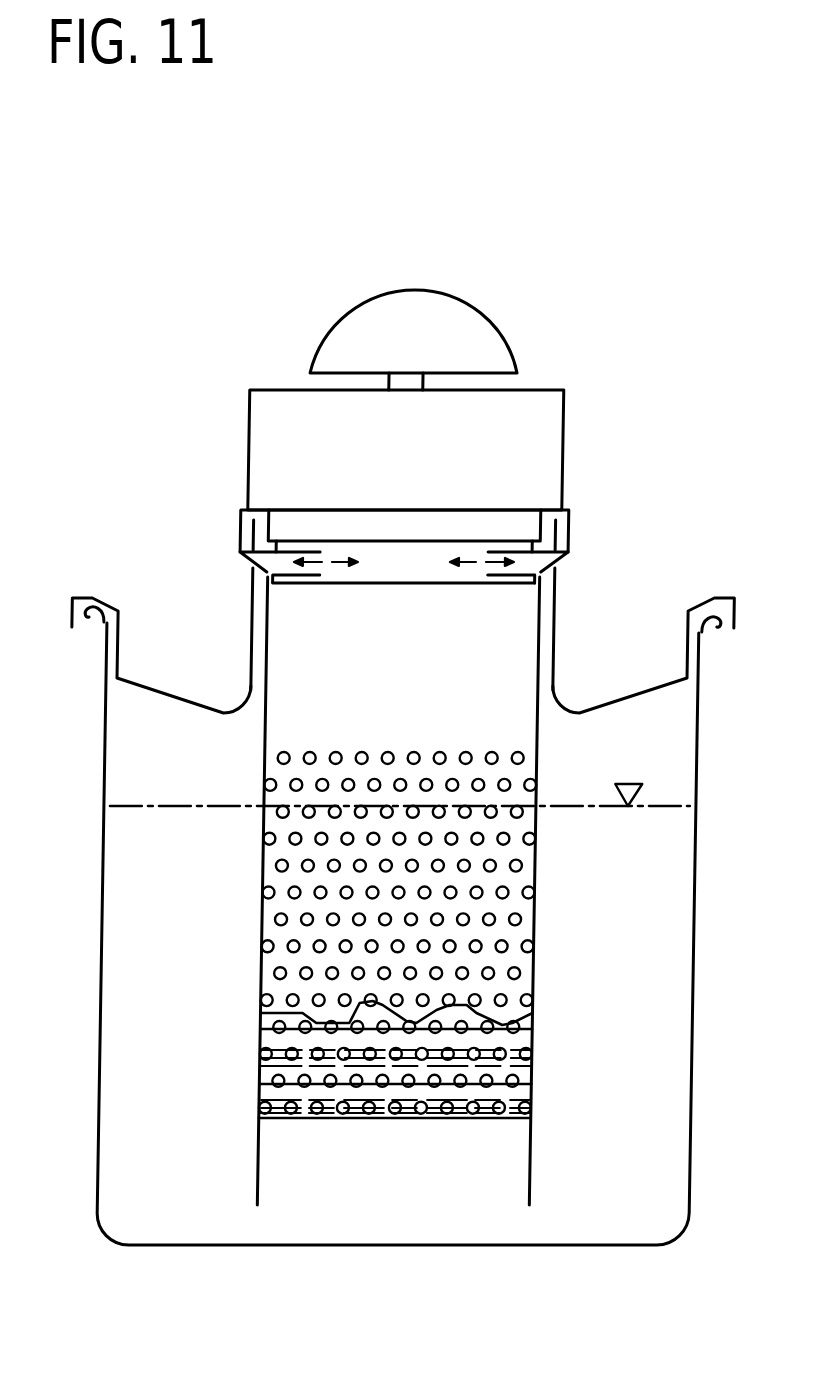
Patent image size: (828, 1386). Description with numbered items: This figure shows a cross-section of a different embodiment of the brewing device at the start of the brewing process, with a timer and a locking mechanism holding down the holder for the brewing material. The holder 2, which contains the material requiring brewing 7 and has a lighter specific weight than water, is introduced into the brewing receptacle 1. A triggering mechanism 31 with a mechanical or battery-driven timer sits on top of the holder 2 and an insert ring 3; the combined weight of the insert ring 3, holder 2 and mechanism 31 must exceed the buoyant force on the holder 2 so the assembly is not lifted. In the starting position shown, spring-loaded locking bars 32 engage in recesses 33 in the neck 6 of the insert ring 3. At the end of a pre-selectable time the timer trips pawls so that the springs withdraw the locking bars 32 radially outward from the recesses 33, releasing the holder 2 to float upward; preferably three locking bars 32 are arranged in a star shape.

The brewing receptacle 1 is at (103, 900).
The holder 2 is at (264, 868).
The insert ring 3 is at (157, 692).
The neck 6 is at (249, 632).
The material requiring brewing 7 is at (501, 1085).
The triggering mechanism 31 is at (531, 433).
The locking bars 32 is at (536, 560).
The recesses 33 is at (553, 566).